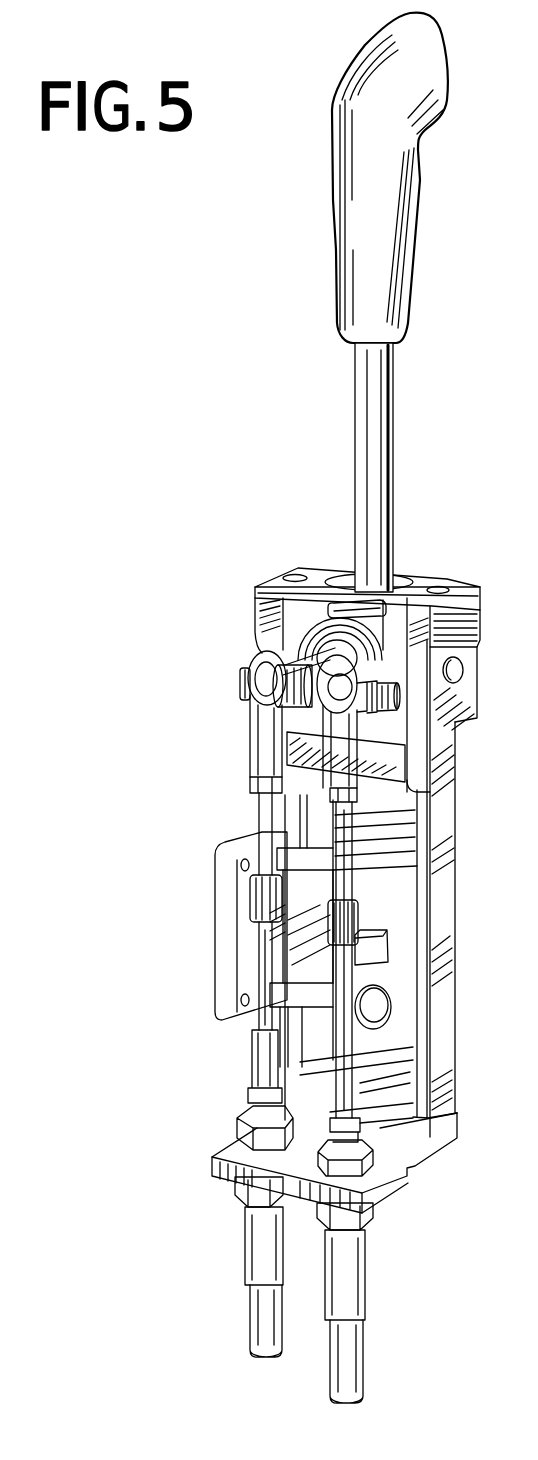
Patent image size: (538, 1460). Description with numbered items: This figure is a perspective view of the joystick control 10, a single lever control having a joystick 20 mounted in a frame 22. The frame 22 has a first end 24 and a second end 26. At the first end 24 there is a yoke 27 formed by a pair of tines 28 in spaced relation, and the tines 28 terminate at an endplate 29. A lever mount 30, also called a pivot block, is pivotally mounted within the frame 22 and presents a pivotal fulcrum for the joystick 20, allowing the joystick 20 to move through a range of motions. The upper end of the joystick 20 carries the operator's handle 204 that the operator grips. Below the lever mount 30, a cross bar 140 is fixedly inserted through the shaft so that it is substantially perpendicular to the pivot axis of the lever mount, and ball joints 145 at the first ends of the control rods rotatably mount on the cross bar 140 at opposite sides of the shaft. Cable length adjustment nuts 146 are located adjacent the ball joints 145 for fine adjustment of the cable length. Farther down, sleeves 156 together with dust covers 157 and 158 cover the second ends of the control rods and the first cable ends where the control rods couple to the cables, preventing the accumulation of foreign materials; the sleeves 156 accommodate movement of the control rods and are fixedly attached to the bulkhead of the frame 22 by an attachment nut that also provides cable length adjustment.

The joystick control 10 is at (199, 408).
The joystick 20 is at (392, 448).
The frame 22 is at (468, 944).
The first end 24 is at (481, 600).
The second end 26 is at (455, 1108).
The yoke 27 is at (477, 658).
The tines 28 is at (257, 632).
The endplate 29 is at (281, 580).
The lever mount 30 is at (383, 637).
The cross bar 140 is at (400, 700).
The ball joints 145 is at (248, 693).
The cable length adjustment nuts 146 is at (262, 786).
The sleeves 156 is at (341, 1025).
The dust cover 157 is at (355, 912).
The dust cover 158 is at (345, 1093).
The operator's handle 204 is at (402, 208).